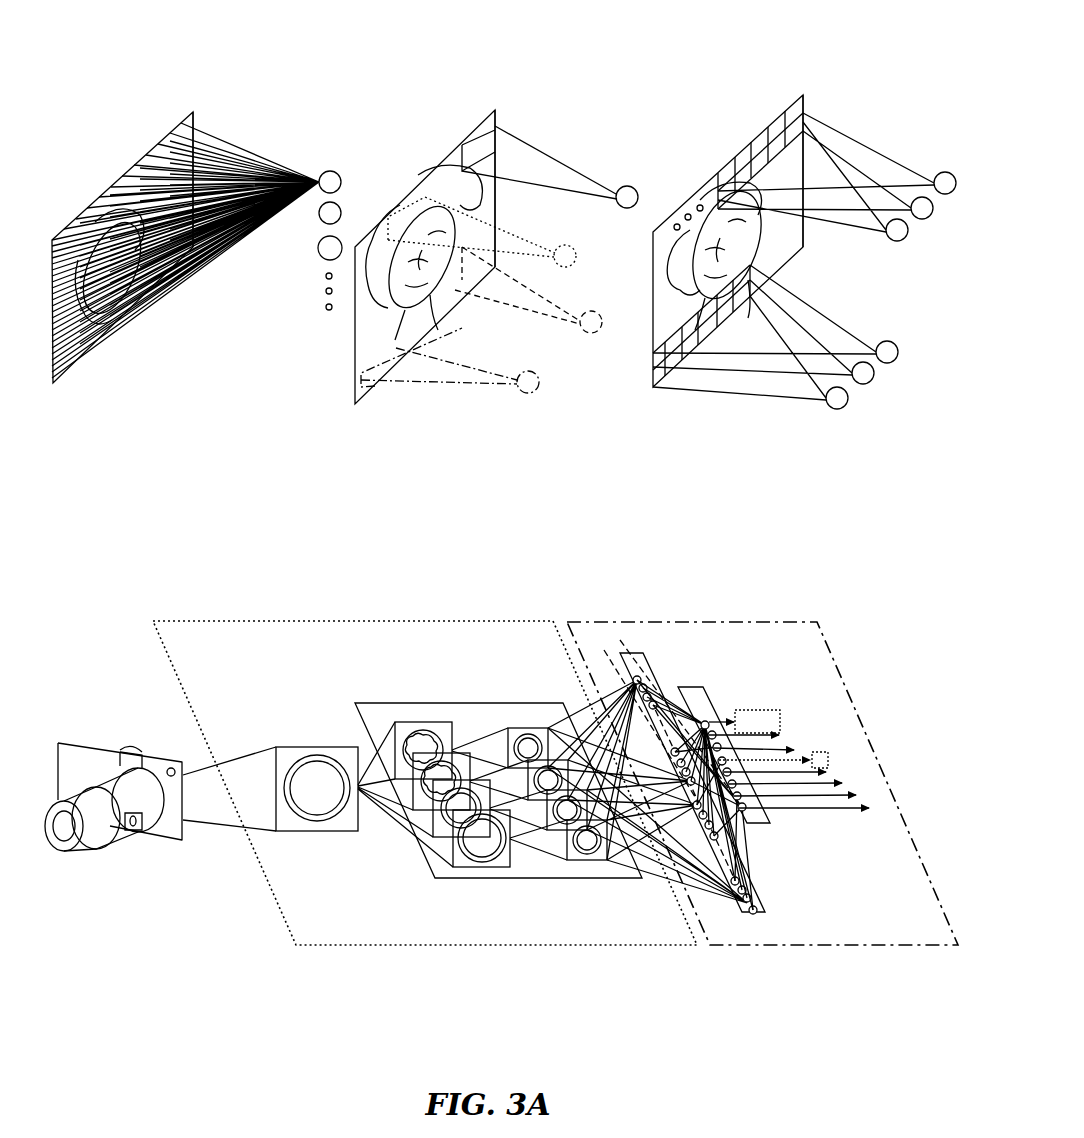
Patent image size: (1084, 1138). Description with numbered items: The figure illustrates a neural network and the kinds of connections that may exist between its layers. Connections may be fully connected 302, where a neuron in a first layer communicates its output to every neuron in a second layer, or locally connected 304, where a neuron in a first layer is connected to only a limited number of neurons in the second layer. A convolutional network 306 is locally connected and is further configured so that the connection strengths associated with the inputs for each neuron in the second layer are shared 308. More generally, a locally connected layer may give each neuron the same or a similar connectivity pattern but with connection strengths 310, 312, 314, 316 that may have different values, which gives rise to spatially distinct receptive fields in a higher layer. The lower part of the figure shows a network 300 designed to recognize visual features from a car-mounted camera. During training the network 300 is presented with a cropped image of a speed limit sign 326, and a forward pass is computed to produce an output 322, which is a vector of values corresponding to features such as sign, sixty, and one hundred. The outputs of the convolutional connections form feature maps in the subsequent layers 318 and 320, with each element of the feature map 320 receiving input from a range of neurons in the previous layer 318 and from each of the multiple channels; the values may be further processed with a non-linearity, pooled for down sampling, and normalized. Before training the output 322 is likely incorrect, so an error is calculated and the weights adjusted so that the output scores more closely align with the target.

The network 300 is at (226, 588).
The fully connected network 302 is at (188, 70).
The locally connected network 304 is at (485, 68).
The convolutional network 306 is at (710, 68).
The shared connection strengths 308 is at (807, 313).
The connection strength 310 is at (580, 171).
The connection strength 312 is at (525, 230).
The connection strength 314 is at (549, 322).
The connection strength 316 is at (427, 378).
The feature map layer 318 is at (382, 632).
The feature map layer 320 is at (495, 632).
The output 322 is at (745, 647).
The cropped image of a speed limit sign 326 is at (313, 747).